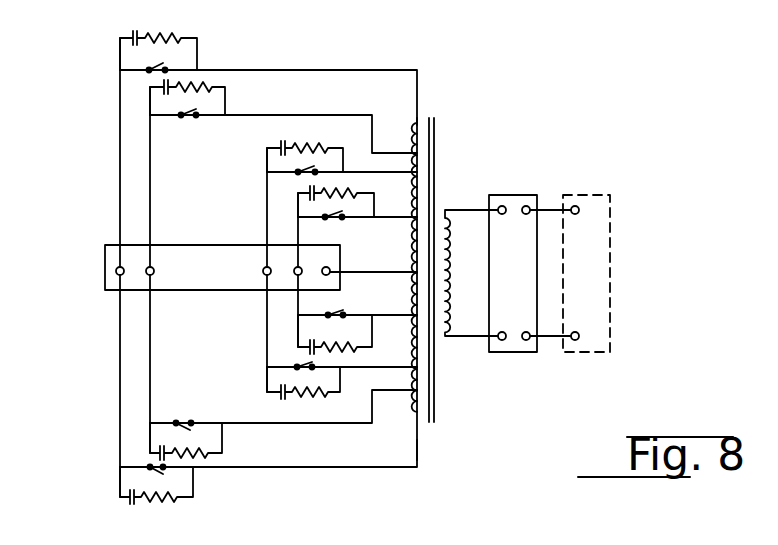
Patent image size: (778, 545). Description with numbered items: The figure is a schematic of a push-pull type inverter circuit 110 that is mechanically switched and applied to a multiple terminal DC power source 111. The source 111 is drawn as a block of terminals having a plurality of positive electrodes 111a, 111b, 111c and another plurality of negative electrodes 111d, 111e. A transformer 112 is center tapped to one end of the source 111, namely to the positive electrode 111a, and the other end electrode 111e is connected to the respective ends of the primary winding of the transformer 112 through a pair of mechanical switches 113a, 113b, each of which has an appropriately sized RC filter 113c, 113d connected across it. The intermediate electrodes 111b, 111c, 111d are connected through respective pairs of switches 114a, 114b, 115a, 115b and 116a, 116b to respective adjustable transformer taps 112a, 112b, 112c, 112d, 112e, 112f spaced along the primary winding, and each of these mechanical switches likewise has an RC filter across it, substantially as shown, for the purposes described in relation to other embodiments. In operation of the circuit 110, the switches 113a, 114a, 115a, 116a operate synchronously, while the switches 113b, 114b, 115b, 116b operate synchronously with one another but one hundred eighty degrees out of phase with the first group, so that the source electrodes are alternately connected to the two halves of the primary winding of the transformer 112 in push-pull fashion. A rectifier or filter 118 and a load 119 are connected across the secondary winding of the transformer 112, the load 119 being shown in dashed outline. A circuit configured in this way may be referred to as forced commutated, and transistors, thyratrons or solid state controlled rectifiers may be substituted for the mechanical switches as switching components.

The push-pull type inverter circuit 110 is at (346, 271).
The multiple terminal DC power source 111 is at (167, 292).
The positive electrode 111a is at (328, 276).
The positive electrode 111b is at (296, 266).
The positive electrode 111c is at (265, 276).
The negative electrode 111d is at (149, 266).
The negative electrode 111e is at (117, 275).
The transformer 112 is at (436, 398).
The adjustable transformer tap 112a is at (421, 213).
The adjustable transformer tap 112b is at (421, 367).
The adjustable transformer tap 112c is at (421, 168).
The adjustable transformer tap 112d is at (421, 386).
The adjustable transformer tap 112e is at (412, 128).
The adjustable transformer tap 112f is at (419, 452).
The mechanical switch 113a is at (157, 66).
The mechanical switch 113b is at (152, 462).
The RC filter 113c is at (197, 50).
The RC filter 113d is at (193, 487).
The switch 114a is at (332, 213).
The switch 114b is at (330, 313).
The switch 115a is at (305, 168).
The switch 115b is at (300, 366).
The switch 116a is at (185, 110).
The switch 116b is at (185, 418).
The rectifier or filter 118 is at (525, 353).
The load 119 is at (592, 353).